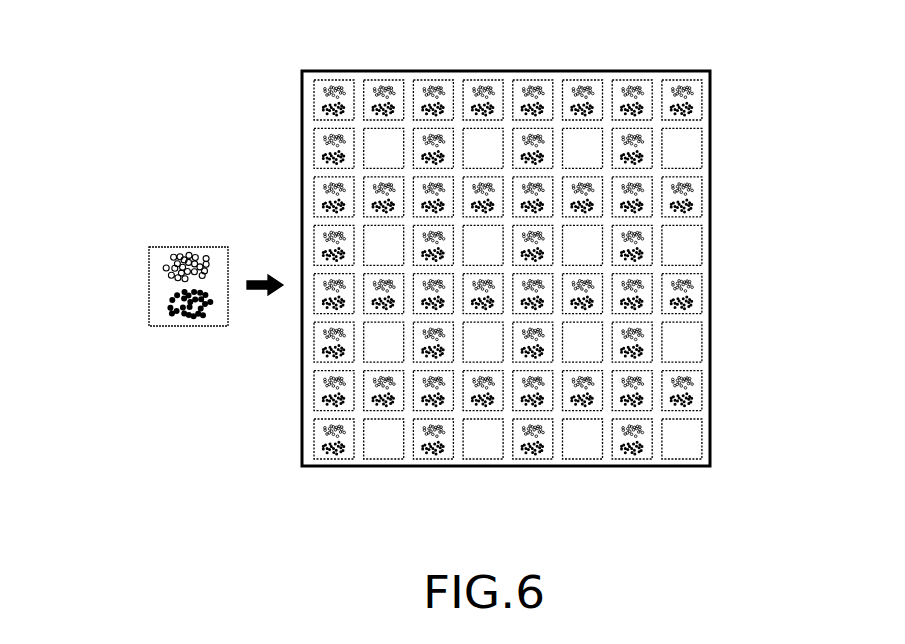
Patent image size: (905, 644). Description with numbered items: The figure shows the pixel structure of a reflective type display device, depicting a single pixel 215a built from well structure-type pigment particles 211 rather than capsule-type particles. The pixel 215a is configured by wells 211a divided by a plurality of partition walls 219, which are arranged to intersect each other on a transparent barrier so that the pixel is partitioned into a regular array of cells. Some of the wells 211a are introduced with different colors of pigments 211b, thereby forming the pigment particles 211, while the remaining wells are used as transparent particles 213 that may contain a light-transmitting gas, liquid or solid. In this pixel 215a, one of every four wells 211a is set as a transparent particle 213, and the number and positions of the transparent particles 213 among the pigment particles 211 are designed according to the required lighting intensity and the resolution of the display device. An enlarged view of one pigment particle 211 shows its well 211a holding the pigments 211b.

The pigment particles 211 is at (382, 88).
The well 211a is at (215, 247).
The pigments 211b is at (178, 258).
The transparent particles 213 is at (385, 447).
The pixel 215a is at (712, 265).
The partition walls 219 is at (458, 95).